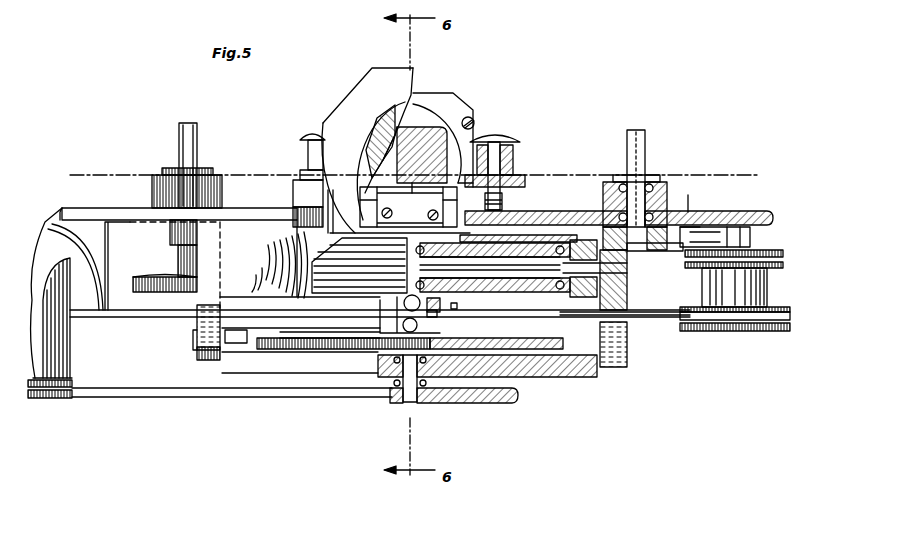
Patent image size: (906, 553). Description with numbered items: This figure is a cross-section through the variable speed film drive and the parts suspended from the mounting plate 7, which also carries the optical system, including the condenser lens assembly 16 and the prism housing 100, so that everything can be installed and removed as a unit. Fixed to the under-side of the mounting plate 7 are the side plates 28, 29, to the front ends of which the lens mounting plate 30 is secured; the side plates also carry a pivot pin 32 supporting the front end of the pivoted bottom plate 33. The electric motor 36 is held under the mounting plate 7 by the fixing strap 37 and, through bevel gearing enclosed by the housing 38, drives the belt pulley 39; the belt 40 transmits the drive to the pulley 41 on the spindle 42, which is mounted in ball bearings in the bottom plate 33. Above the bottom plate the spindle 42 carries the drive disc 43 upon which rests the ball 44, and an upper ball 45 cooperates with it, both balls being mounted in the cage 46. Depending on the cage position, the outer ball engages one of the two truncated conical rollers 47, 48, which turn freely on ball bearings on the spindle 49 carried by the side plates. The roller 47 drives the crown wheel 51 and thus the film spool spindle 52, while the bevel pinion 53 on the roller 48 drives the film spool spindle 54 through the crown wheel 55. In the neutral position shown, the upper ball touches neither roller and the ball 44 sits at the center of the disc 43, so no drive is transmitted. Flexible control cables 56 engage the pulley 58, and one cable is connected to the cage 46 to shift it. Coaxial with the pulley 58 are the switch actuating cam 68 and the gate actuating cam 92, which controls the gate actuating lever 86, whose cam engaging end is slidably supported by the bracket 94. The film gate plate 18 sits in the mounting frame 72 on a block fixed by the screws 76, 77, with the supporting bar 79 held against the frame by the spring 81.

The mounting plate 7 is at (700, 212).
The condenser lens assembly 16 is at (472, 103).
The plate 18 is at (410, 133).
The side plate 28 is at (628, 353).
The side plate 29 is at (212, 362).
The lens mounting plate 30 is at (240, 230).
The pivot pin 32 is at (193, 346).
The bottom plate 33 is at (590, 378).
The electric motor 36 is at (67, 233).
The fixing strap 37 is at (107, 243).
The housing 38 is at (70, 367).
The belt pulley 39 is at (67, 399).
The belt 40 is at (185, 398).
The pulley 41 is at (487, 405).
The spindle 42 is at (403, 402).
The drive disc 43 is at (560, 346).
The ball 44 is at (385, 332).
The upper ball 45 is at (377, 307).
The cage 46 is at (445, 307).
The truncated conical roller 47 is at (337, 255).
The truncated conical roller 48 is at (563, 233).
The spindle 49 is at (623, 264).
The crown wheel 51 is at (152, 277).
The film spool spindle 52 is at (180, 135).
The bevel pinion 53 is at (617, 278).
The film spool spindle 54 is at (646, 148).
The crown wheel 55 is at (672, 252).
The flexible control cable 56 is at (150, 315).
The pulley 58 is at (777, 309).
The switch actuating cam 68 is at (773, 273).
The mounting frame 72 is at (455, 180).
The fixing screw 76 is at (428, 215).
The fixing screw 77 is at (408, 207).
The supporting bar 79 is at (404, 145).
The spring 81 is at (418, 193).
The gate actuating lever 86 is at (518, 232).
The gate actuating cam 92 is at (772, 252).
The bracket 94 is at (689, 206).
The prism housing 100 is at (362, 103).